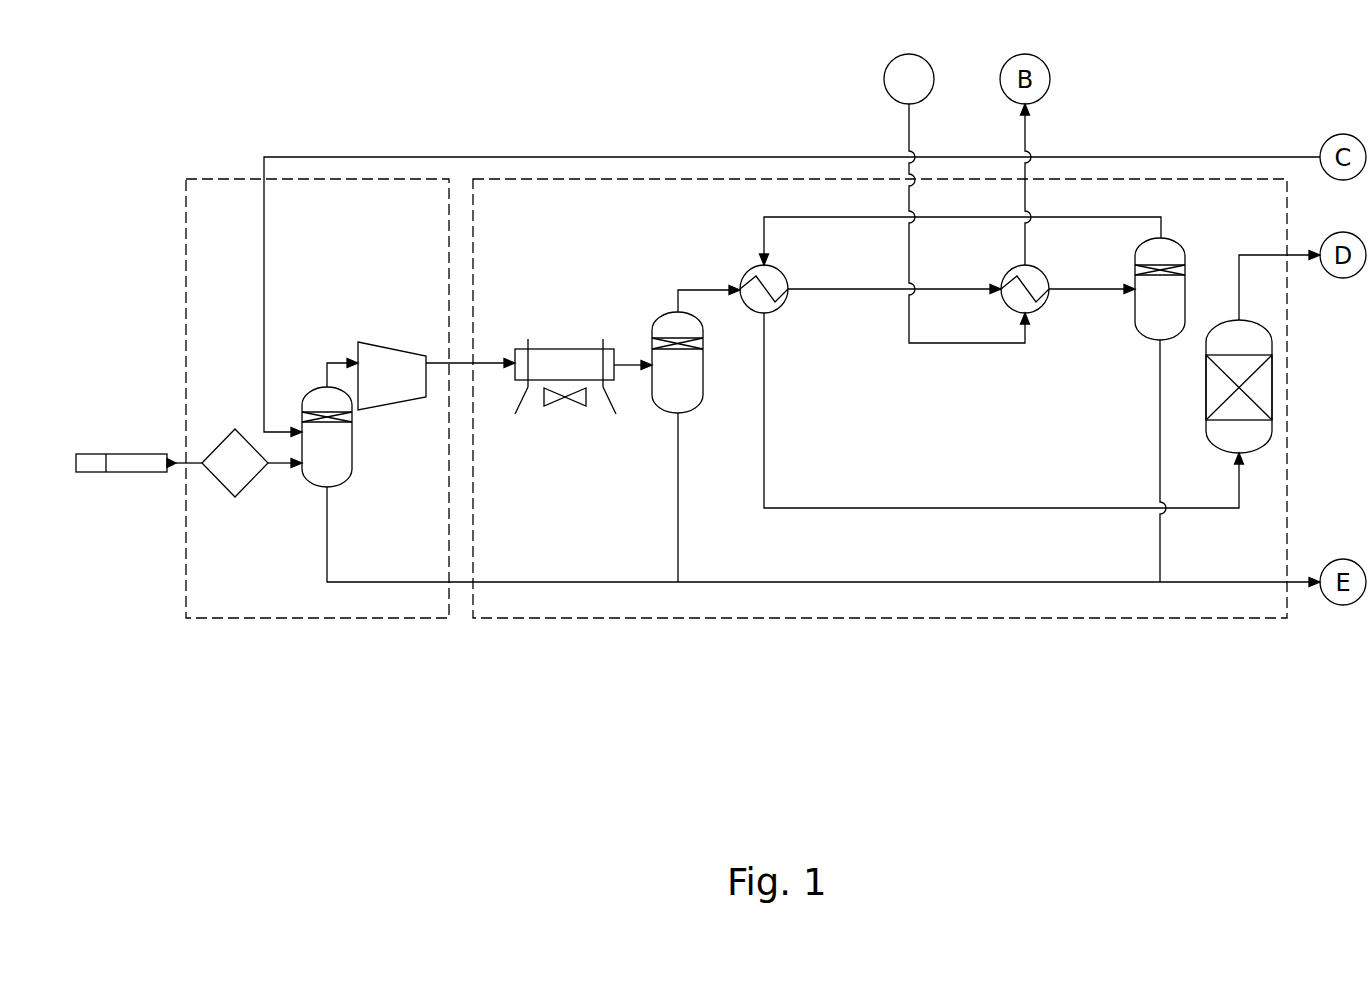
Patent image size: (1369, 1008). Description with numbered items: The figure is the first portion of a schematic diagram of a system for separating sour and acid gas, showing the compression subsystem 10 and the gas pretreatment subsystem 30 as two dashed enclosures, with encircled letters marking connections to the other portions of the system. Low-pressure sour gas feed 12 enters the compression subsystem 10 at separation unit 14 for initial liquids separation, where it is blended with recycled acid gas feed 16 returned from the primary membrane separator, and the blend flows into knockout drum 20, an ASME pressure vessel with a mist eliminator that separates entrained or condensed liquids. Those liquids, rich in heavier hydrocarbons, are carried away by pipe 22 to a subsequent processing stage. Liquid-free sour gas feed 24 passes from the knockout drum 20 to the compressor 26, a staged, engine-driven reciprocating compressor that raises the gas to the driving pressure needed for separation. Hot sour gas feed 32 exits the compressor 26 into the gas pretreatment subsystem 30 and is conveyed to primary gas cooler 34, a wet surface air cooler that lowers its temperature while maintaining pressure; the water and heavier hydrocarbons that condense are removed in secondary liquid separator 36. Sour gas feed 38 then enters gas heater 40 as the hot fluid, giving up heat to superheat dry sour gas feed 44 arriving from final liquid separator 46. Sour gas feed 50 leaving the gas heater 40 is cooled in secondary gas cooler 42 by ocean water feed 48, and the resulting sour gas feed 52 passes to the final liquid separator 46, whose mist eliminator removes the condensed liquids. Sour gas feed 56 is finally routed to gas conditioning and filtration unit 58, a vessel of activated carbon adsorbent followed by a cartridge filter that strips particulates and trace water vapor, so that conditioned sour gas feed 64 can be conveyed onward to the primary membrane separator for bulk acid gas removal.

The compression subsystem 10 is at (222, 178).
The sour gas feed 12 is at (124, 455).
The separation unit 14 is at (294, 486).
The recycled acid gas feed 16 is at (320, 155).
The knockout drum 20 is at (327, 437).
The pipe 22 is at (519, 582).
The liquid-free sour gas feed 24 is at (343, 362).
The compressor 26 is at (392, 376).
The gas pretreatment subsystem 30 is at (528, 178).
The sour gas feed 32 is at (493, 362).
The primary gas cooler 34 is at (583, 376).
The secondary liquid separator 36 is at (677, 447).
The sour gas feed 38 is at (706, 288).
The gas heater 40 is at (783, 307).
The secondary gas cooler 42 is at (1043, 306).
The dry sour gas feed 44 is at (781, 217).
The final liquid separator 46 is at (1160, 410).
The ocean water feed 48 is at (909, 120).
The sour gas feed 50 is at (873, 290).
The sour gas feed 52 is at (1093, 288).
The sour gas feed 56 is at (971, 508).
The gas conditioning and filtration unit 58 is at (1239, 386).
The sour gas feed 64 is at (1259, 254).